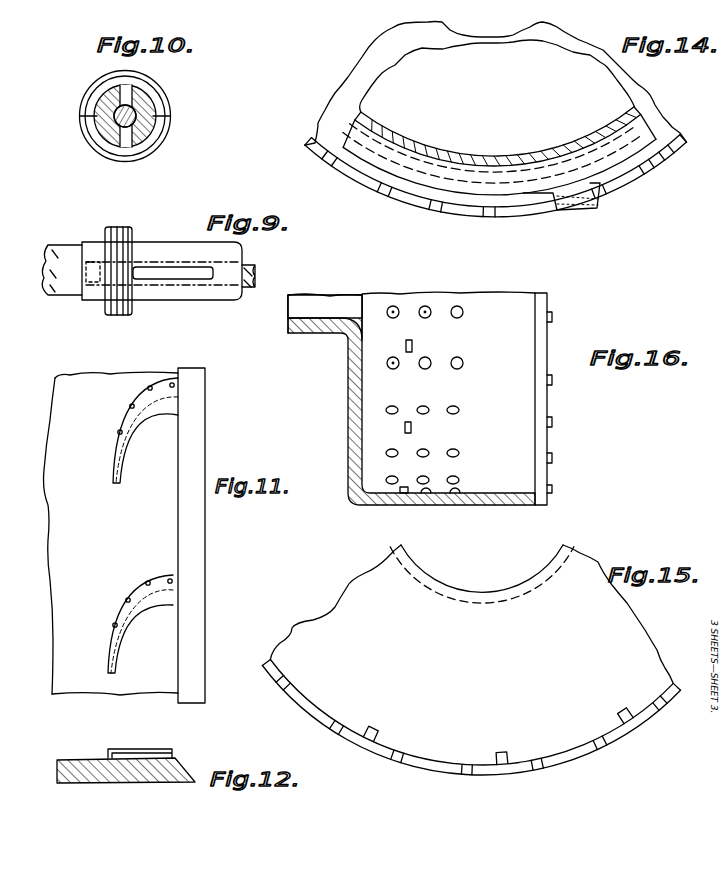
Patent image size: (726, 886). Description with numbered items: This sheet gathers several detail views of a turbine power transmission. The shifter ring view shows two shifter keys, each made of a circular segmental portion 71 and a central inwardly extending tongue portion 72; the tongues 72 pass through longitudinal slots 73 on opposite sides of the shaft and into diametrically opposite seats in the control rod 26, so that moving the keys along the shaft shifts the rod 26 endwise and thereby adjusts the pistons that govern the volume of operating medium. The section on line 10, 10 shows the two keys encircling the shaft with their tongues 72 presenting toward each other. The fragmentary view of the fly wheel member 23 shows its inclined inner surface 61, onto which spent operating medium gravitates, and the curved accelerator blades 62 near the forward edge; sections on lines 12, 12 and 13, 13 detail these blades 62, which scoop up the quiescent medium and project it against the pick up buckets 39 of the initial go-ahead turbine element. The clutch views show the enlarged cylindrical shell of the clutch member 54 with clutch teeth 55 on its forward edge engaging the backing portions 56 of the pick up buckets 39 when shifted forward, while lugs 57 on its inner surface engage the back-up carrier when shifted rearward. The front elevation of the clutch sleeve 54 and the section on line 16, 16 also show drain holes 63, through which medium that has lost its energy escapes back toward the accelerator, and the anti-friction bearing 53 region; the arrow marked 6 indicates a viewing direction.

In FIG. 15, the section line 6 is at (480, 792).
In FIG. 9, the section line 10 10 is at (148, 322).
In FIG. 11, the section line 12 12 is at (35, 745).
In FIG. 11, the section line 13 13 is at (150, 632).
In FIG. 15, the section line 16 16 is at (457, 570).
In FIG. 11, the fly wheel member 23 is at (49, 535).
In FIG. 12, the fly wheel member 23 is at (71, 759).
In FIG. 10, the control rod 26 is at (158, 117).
In FIG. 9, the control rod 26 is at (255, 268).
In FIG. 14, the pick up buckets 39 is at (590, 208).
In FIG. 16, the anti-friction bearing 53 is at (323, 336).
In FIG. 14, the clutch member 54 is at (679, 152).
In FIG. 16, the clutch member 54 is at (491, 505).
In FIG. 15, the clutch member 54 is at (588, 751).
In FIG. 14, the clutch teeth 55 is at (606, 192).
In FIG. 16, the clutch teeth 55 is at (552, 457).
In FIG. 15, the clutch teeth 55 is at (342, 725).
In FIG. 14, the backing portions 56 is at (563, 210).
In FIG. 16, the lugs 57 is at (413, 427).
In FIG. 15, the lugs 57 is at (378, 733).
In FIG. 11, the inner surface 61 is at (94, 515).
In FIG. 11, the accelerator blades 62 is at (128, 437).
In FIG. 12, the accelerator blades 62 is at (141, 752).
In FIG. 16, the drain holes 63 is at (457, 358).
In FIG. 10, the circular segmental portion 71 is at (138, 96).
In FIG. 9, the circular segmental portion 71 is at (107, 311).
In FIG. 10, the tongue portion 72 is at (118, 94).
In FIG. 9, the longitudinal slots 73 is at (197, 274).